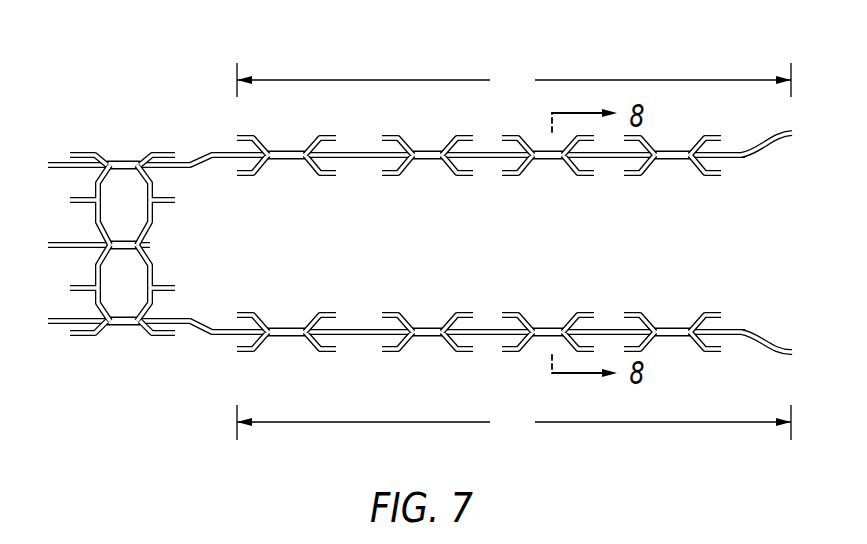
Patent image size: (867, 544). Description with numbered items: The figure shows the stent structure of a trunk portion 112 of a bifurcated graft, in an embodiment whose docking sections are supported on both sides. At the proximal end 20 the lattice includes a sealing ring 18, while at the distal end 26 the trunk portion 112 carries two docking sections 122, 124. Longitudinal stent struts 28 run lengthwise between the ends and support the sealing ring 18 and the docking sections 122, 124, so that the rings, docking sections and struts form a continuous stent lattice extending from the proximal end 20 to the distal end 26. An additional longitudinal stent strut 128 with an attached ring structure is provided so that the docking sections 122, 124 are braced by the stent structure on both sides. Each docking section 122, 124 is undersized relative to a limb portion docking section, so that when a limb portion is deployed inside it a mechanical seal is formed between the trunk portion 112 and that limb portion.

The proximal end 20 is at (38, 124).
The sealing ring 18 is at (107, 162).
The longitudinal stent struts 28 is at (70, 245).
The additional longitudinal stent strut 128 is at (713, 175).
The trunk portion 112 is at (120, 365).
The distal end 26 is at (815, 362).
The docking section 124 is at (528, 93).
The docking section 122 is at (528, 435).